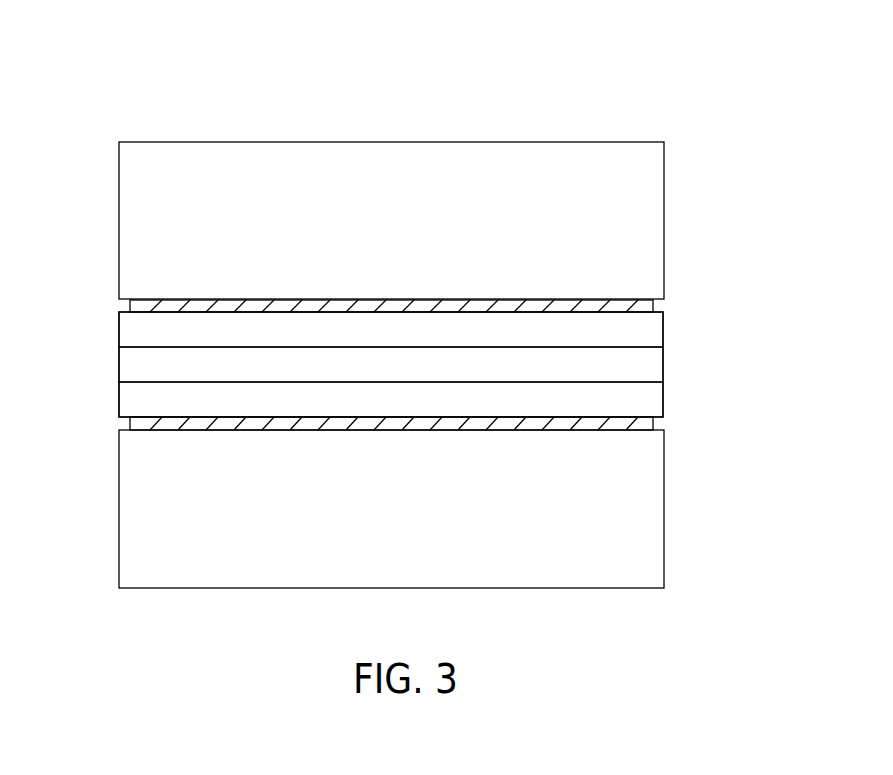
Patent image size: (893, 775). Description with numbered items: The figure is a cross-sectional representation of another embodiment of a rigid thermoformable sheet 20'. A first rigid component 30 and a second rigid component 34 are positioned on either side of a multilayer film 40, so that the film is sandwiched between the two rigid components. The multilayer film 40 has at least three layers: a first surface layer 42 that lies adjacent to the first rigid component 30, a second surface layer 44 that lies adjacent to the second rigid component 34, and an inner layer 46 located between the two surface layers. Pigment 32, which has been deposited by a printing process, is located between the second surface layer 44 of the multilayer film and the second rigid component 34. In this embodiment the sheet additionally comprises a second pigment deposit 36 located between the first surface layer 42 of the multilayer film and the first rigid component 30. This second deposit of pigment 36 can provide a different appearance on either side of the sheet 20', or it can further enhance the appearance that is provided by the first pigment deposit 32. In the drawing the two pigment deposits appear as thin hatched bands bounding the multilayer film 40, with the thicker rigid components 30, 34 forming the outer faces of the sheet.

The rigid thermoformable sheet 20' is at (437, 311).
The first rigid component 30 is at (664, 212).
The second pigment deposit 36 is at (653, 305).
The multilayer film 40 is at (680, 312).
The first surface layer 42 is at (119, 330).
The inner layer 46 is at (119, 365).
The second surface layer 44 is at (119, 400).
The pigment 32 is at (654, 423).
The second rigid component 34 is at (664, 522).